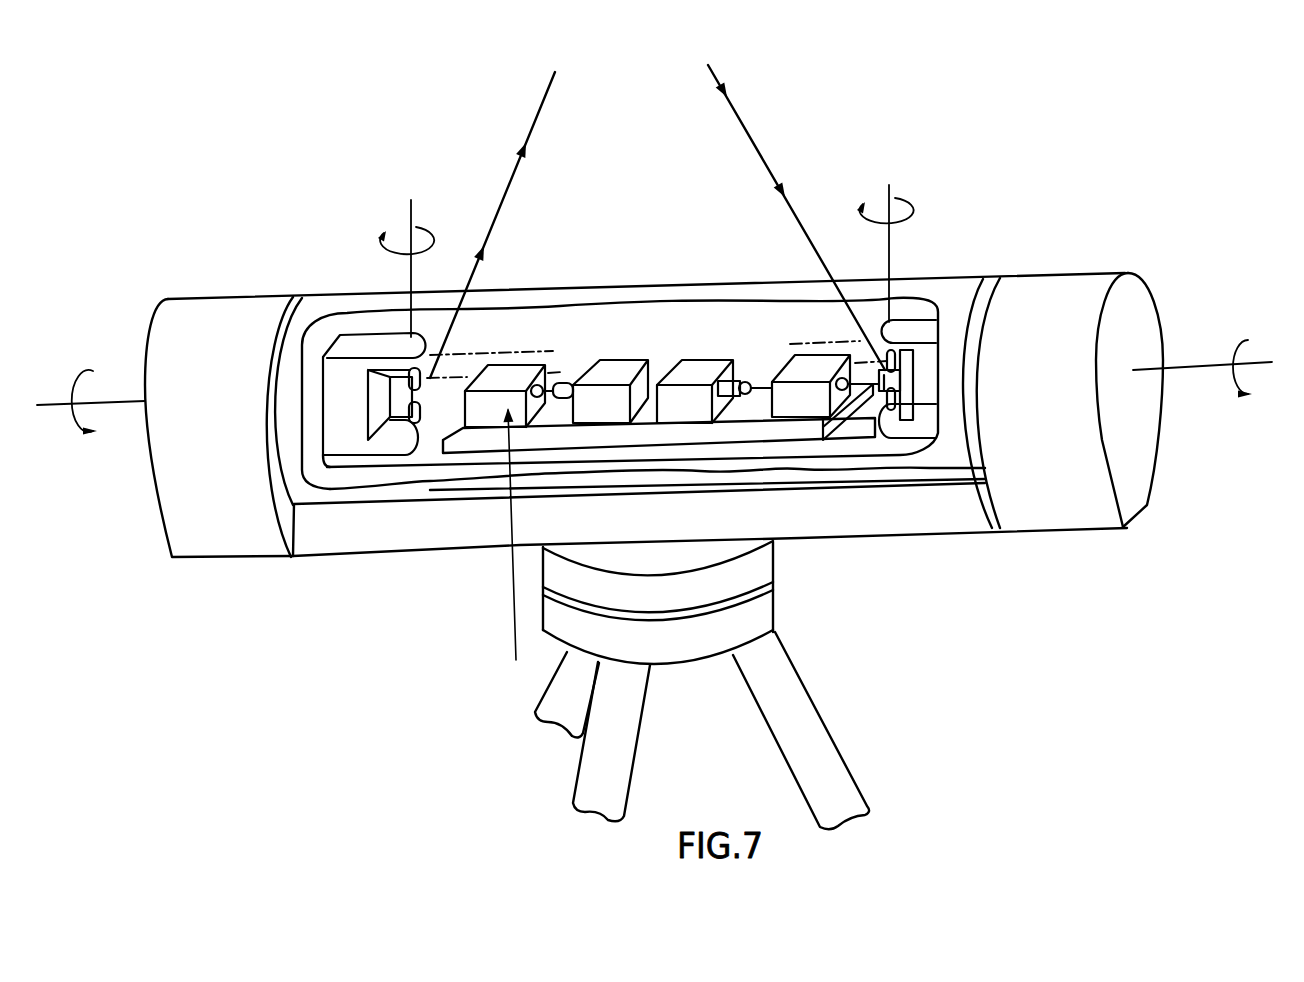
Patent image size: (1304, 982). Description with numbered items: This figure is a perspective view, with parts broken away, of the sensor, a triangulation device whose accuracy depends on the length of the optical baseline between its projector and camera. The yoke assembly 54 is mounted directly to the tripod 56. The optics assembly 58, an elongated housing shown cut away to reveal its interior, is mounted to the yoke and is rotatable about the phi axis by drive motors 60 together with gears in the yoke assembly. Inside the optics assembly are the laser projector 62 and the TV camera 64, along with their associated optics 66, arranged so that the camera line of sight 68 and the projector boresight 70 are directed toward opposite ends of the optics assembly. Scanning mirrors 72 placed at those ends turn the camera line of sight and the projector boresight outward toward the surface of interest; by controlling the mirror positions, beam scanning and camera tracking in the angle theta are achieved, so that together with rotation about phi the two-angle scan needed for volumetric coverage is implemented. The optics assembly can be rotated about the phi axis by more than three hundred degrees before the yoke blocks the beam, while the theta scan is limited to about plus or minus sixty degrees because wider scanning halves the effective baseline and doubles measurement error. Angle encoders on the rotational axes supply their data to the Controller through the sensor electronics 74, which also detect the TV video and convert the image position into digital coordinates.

The yoke assembly 54 is at (500, 554).
The tripod 56 is at (712, 665).
The optics assembly 58 is at (1045, 192).
The drive motors 60 is at (1033, 533).
The laser projector 62 is at (576, 407).
The TV camera 64 is at (660, 407).
The associated optics 66 is at (855, 583).
The camera line of sight 68 is at (770, 166).
The projector boresight 70 is at (548, 78).
The scanning mirrors 72 is at (933, 383).
The sensor electronics 74 is at (187, 457).